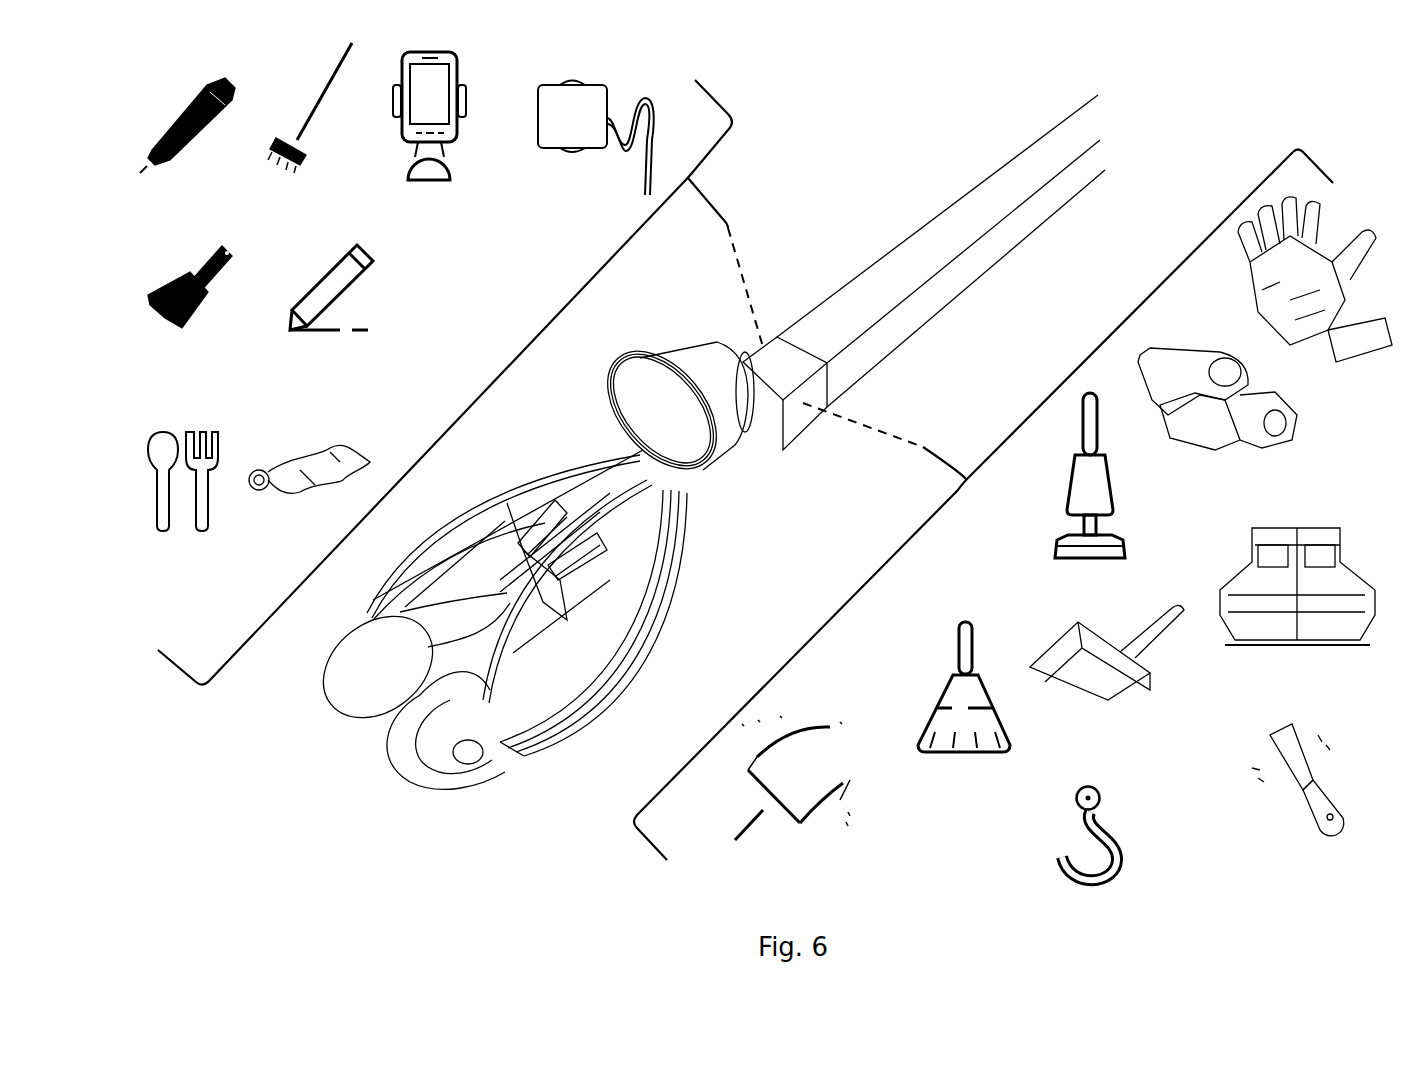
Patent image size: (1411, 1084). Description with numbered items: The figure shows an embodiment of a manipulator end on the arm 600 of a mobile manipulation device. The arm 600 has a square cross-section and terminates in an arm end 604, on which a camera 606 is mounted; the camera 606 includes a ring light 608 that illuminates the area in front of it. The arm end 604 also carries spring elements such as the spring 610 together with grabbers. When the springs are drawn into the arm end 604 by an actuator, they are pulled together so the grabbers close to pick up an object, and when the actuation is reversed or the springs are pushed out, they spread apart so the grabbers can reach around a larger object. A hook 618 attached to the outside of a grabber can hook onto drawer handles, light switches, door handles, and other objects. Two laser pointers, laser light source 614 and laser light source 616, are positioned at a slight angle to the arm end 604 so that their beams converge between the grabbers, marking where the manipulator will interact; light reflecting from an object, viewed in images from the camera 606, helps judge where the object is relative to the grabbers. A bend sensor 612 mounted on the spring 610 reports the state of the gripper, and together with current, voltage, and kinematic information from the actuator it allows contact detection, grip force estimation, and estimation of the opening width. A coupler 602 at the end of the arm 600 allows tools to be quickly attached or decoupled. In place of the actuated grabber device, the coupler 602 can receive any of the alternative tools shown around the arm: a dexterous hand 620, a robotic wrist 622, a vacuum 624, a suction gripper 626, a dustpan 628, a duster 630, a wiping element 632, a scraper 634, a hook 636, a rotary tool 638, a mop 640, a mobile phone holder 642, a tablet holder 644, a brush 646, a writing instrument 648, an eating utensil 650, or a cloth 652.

The arm 600 is at (992, 177).
The coupler 602 is at (810, 433).
The arm end 604 is at (740, 468).
The camera 606 is at (690, 348).
The ring light 608 is at (625, 360).
The spring 610 is at (667, 577).
The bend sensor 612 is at (622, 677).
The laser light source 614 is at (560, 498).
The laser light source 616 is at (602, 535).
The hook 618 is at (495, 775).
The dexterous hand 620 is at (1315, 296).
The robotic wrist 622 is at (1217, 417).
The vacuum 624 is at (1090, 495).
The suction gripper 626 is at (1297, 610).
The dustpan 628 is at (1107, 674).
The duster 630 is at (964, 709).
The wiping element 632 is at (792, 797).
The scraper 634 is at (1298, 800).
The hook 636 is at (1088, 855).
The rotary tool 638 is at (187, 131).
The mop 640 is at (309, 124).
The mobile phone holder 642 is at (429, 131).
The tablet holder 644 is at (596, 144).
The brush 646 is at (190, 306).
The writing instrument 648 is at (330, 306).
The eating utensil 650 is at (183, 503).
The cloth 652 is at (309, 495).